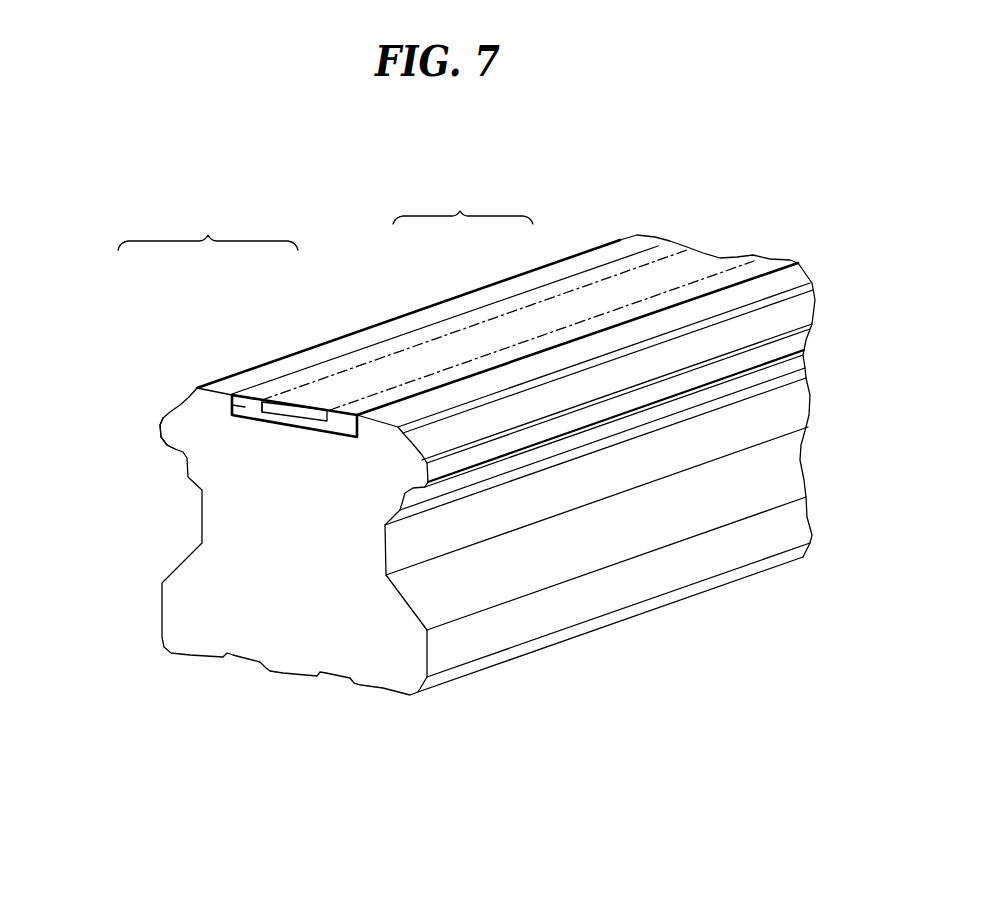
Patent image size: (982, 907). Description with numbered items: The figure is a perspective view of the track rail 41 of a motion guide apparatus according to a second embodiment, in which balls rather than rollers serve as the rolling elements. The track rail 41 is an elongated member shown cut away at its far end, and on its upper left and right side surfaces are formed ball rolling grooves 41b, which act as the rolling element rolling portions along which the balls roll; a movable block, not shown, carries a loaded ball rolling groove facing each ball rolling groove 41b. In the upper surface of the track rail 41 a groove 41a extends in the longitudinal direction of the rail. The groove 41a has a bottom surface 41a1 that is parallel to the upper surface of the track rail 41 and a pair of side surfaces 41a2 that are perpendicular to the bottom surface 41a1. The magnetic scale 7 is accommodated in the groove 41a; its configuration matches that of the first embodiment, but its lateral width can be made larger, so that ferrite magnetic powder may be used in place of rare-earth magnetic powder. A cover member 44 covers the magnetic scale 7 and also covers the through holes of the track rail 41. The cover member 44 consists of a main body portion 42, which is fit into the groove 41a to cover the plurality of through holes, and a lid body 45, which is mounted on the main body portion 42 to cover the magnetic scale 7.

The magnetic scale 7 is at (285, 403).
The track rail 41 is at (288, 605).
The groove 41a is at (237, 318).
The bottom surface 41a1 is at (254, 404).
The side surfaces 41a2 is at (250, 412).
The ball rolling grooves 41b is at (175, 410).
The main body portion 42 is at (333, 413).
The cover member 44 is at (474, 288).
The lid body 45 is at (497, 337).